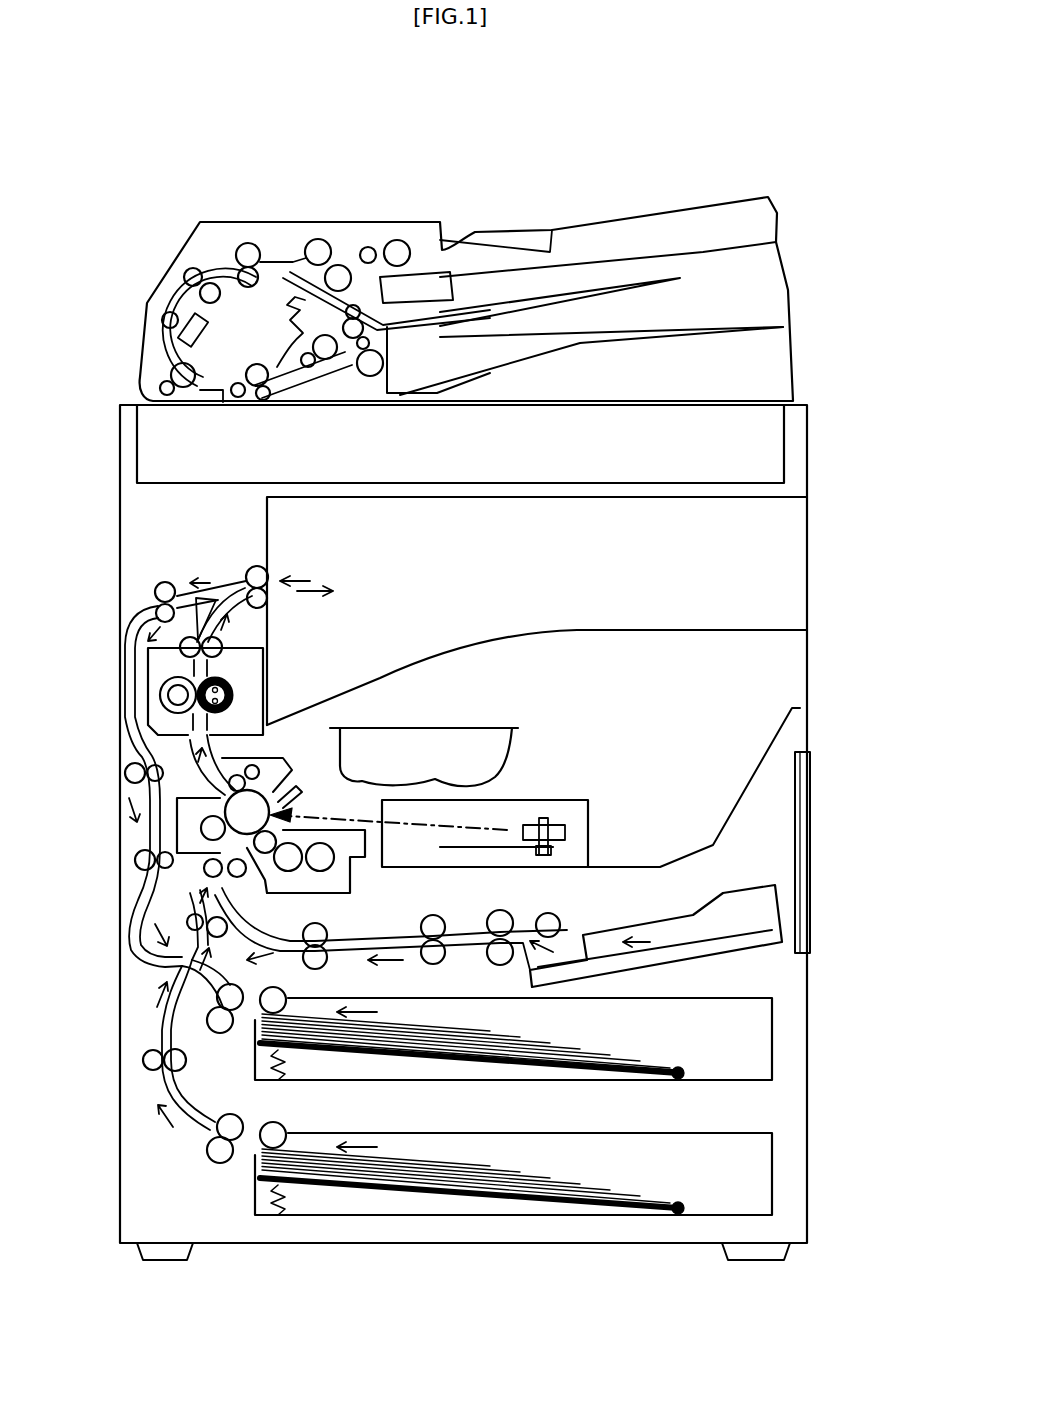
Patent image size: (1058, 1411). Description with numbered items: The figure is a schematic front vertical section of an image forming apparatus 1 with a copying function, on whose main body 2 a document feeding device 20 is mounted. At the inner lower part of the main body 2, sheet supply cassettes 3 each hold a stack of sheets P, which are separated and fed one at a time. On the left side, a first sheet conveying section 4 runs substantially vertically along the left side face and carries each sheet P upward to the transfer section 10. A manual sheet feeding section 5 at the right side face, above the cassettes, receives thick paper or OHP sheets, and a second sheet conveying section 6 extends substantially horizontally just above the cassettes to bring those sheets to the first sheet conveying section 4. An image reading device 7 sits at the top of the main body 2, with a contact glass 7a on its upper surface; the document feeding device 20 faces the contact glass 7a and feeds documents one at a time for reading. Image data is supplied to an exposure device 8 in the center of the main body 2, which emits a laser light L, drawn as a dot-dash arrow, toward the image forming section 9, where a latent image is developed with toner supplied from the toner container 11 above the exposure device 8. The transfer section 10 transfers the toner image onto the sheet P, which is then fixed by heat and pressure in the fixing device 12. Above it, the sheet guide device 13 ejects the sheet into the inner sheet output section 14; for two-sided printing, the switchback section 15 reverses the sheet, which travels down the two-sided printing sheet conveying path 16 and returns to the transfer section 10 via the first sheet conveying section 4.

The image forming apparatus 1 is at (657, 182).
The main body 2 is at (838, 403).
The sheet supply cassette 3 is at (773, 1043).
The first sheet conveying section 4 is at (150, 1028).
The manual sheet feeding section 5 is at (762, 910).
The second sheet conveying section 6 is at (399, 915).
The image reading device 7 is at (748, 448).
The contact glass 7a is at (663, 390).
The exposure device 8 is at (562, 797).
The image forming section 9 is at (286, 752).
The transfer section 10 is at (176, 830).
The toner container 11 is at (467, 727).
The fixing device 12 is at (147, 683).
The sheet guide device 13 is at (196, 556).
The inner sheet output section 14 is at (365, 677).
The switchback section 15 is at (273, 560).
The two-sided printing sheet conveying path 16 is at (146, 754).
The document feeding device 20 is at (415, 200).
The laser light L is at (373, 837).
The sheet P is at (513, 1200).